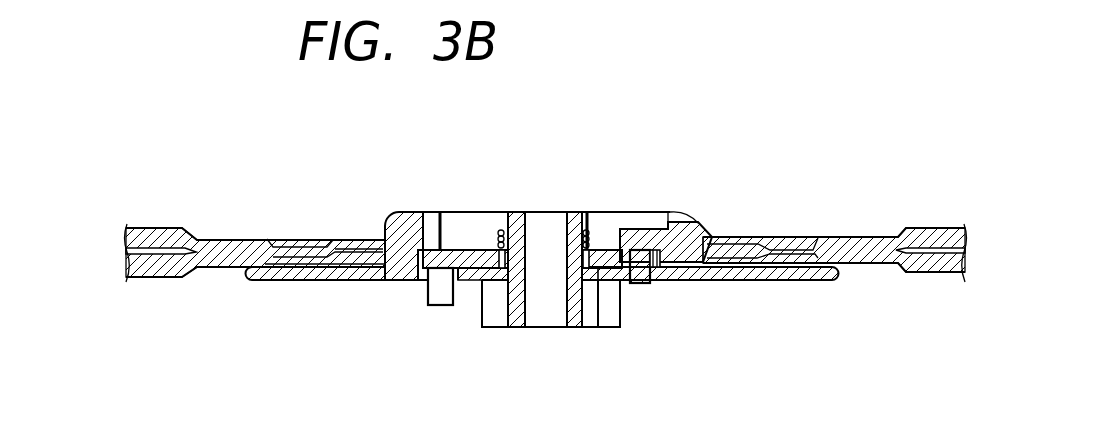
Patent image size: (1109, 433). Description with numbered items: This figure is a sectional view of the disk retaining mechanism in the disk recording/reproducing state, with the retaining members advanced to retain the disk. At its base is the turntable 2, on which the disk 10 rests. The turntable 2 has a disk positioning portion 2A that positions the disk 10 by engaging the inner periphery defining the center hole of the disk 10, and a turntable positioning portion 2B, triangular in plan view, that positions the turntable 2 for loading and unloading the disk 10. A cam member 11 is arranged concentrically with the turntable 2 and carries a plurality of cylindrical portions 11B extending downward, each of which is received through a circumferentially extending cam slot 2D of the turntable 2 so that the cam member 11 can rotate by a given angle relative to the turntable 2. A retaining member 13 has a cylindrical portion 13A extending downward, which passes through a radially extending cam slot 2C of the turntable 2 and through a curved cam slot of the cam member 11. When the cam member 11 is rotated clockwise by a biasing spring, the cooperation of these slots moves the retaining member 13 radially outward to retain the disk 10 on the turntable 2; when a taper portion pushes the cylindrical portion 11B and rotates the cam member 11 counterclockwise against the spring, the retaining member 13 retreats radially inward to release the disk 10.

The turntable 2 is at (257, 282).
The disk positioning portion 2A is at (405, 211).
The turntable positioning portion 2B is at (602, 329).
The cam slot 2C is at (661, 271).
The cam slot 2D is at (457, 282).
The disk 10 is at (217, 229).
The cam member 11 is at (477, 286).
The cylindrical portion 11B is at (434, 306).
The retaining member 13 is at (705, 222).
The cylindrical portion 13A is at (650, 285).